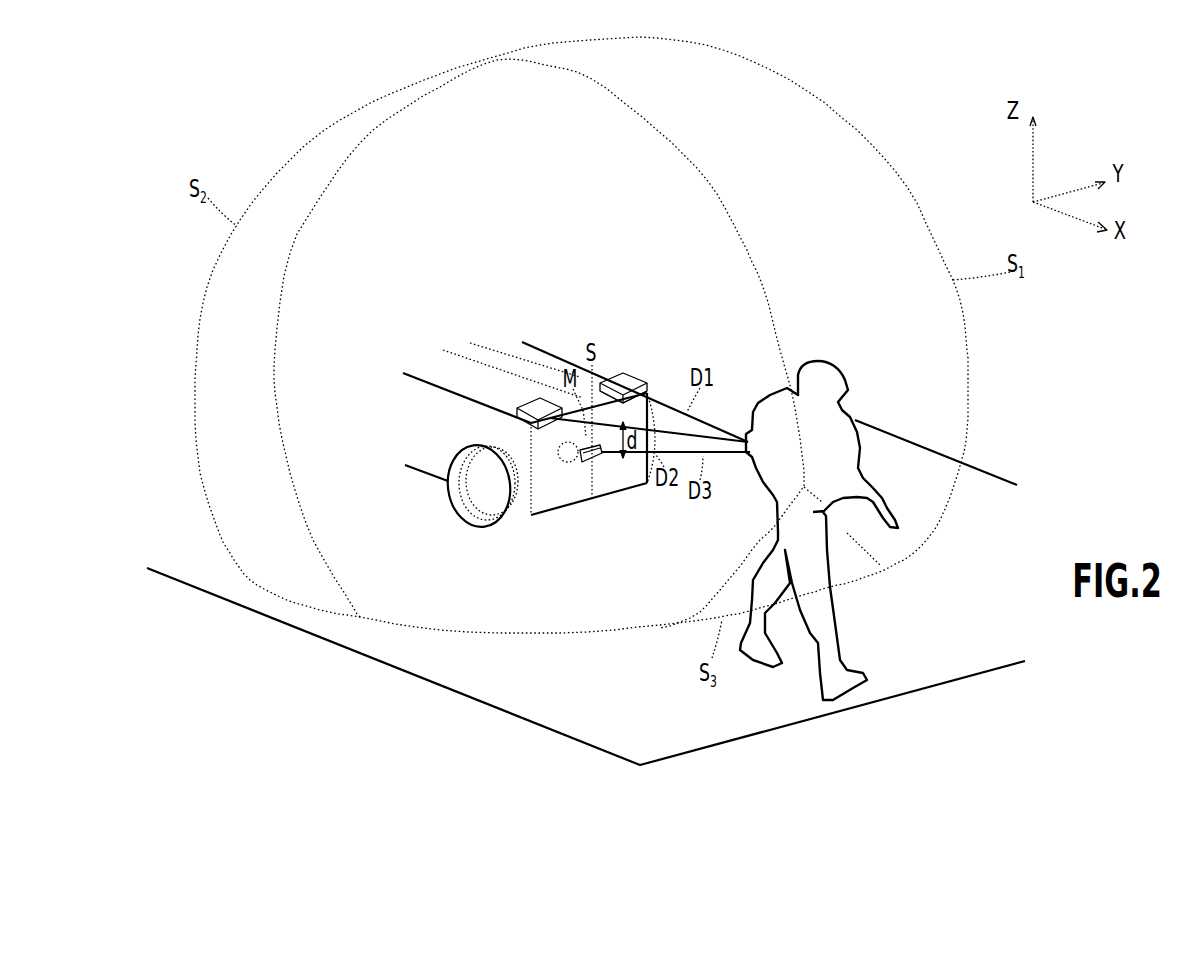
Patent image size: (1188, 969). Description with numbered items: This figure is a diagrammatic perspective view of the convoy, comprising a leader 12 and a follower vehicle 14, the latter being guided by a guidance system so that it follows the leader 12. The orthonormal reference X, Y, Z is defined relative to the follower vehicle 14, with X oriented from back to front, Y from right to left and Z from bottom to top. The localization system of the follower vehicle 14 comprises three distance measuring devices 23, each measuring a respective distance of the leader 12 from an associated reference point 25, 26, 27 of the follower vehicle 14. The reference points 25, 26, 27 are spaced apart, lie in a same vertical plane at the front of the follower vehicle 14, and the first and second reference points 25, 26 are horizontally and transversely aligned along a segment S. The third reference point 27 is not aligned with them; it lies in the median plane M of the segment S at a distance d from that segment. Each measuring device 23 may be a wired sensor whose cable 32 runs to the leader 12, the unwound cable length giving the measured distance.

The leader 12 is at (847, 415).
The follower vehicle 14 is at (533, 362).
The distance measuring device 23 is at (622, 378).
The first reference point 25 is at (641, 385).
The second reference point 26 is at (519, 418).
The third reference point 27 is at (575, 451).
The cable 32 is at (722, 422).